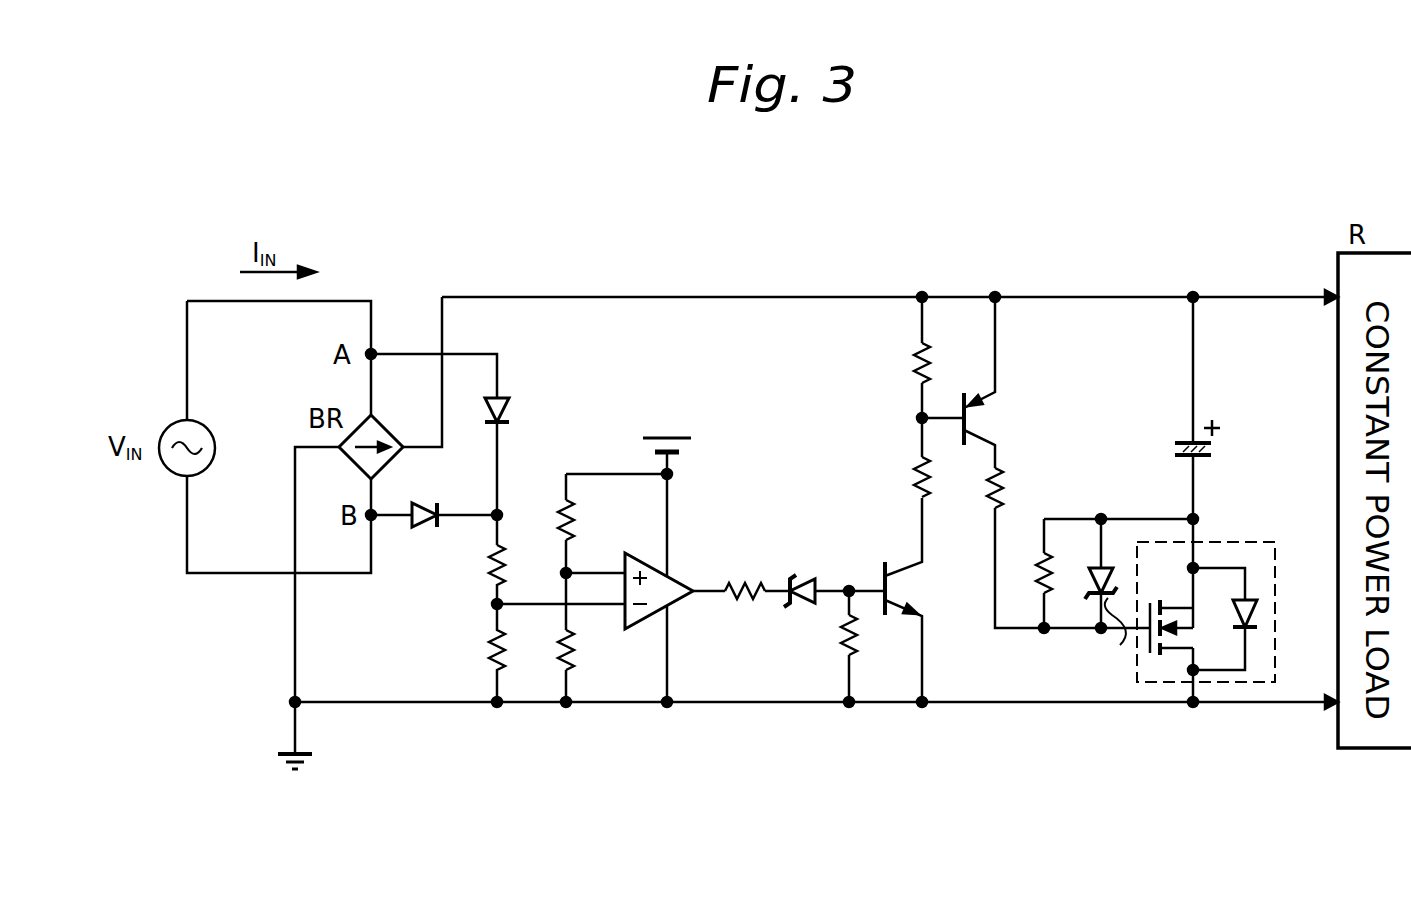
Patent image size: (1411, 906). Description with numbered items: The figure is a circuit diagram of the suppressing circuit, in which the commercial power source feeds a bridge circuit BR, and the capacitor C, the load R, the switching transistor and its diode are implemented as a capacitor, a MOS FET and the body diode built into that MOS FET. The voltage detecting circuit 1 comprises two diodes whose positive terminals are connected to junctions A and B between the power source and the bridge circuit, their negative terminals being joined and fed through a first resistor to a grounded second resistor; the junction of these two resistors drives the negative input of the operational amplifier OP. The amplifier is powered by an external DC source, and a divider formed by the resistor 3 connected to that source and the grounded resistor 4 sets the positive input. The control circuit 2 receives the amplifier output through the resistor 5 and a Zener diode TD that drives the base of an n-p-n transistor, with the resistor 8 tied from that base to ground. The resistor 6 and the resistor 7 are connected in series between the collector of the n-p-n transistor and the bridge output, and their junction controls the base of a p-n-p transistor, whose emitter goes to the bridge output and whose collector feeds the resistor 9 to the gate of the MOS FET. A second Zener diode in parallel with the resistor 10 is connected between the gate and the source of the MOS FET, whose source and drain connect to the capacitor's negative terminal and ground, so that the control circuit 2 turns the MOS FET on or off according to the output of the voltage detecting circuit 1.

The voltage detecting circuit 1 is at (549, 571).
The control circuit 2 is at (994, 543).
The resistor R3 3 is at (583, 520).
The resistor R4 4 is at (583, 651).
The resistor R5 5 is at (744, 570).
The resistor R6 6 is at (899, 477).
The resistor R7 7 is at (899, 363).
The resistor R8 8 is at (868, 643).
The resistor R9 9 is at (1015, 488).
The resistor R10 10 is at (1040, 580).